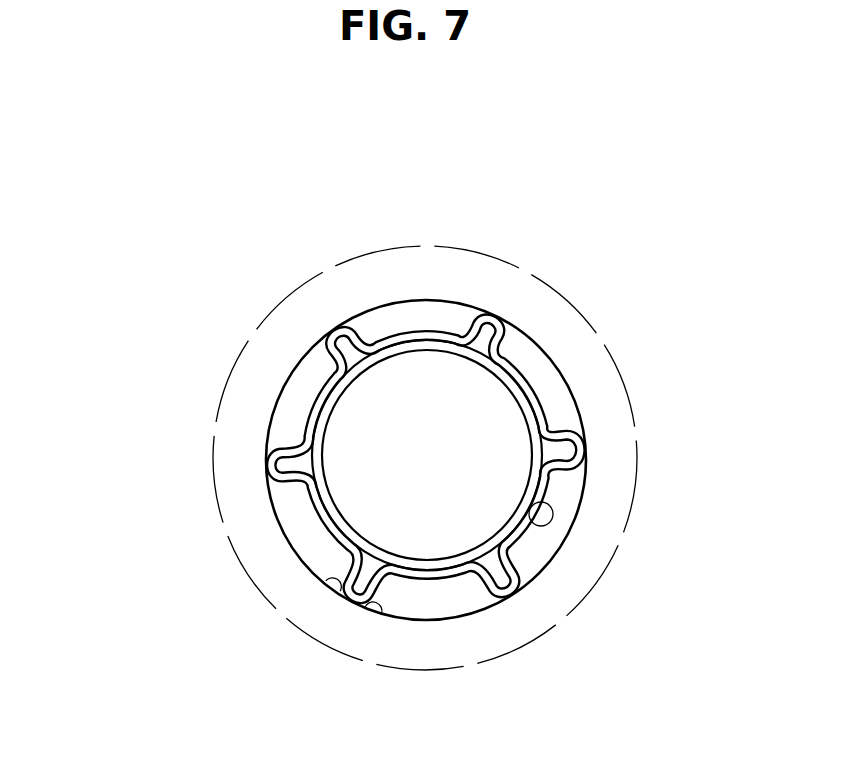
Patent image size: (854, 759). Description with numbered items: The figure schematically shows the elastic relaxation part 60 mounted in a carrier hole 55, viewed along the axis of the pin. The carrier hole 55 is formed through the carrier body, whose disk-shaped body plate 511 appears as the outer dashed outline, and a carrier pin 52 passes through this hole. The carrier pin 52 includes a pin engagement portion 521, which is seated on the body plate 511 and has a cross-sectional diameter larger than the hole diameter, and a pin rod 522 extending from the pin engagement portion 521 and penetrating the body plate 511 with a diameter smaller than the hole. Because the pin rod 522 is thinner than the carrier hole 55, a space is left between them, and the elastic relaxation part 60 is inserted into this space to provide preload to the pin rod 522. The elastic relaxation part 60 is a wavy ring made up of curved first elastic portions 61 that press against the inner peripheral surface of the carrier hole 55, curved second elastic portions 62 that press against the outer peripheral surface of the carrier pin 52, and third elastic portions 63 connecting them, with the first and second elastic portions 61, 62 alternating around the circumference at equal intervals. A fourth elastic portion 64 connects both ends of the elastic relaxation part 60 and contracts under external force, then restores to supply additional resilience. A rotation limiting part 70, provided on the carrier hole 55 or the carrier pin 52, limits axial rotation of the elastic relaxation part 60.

The carrier pin 52 is at (415, 339).
The pin engagement portion 521 is at (307, 374).
The pin rod 522 is at (414, 365).
The carrier hole 55 is at (556, 376).
The body plate 511 is at (607, 465).
The elastic relaxation part 60 is at (318, 458).
The first elastic portion 61 is at (270, 467).
The second elastic portion 62 is at (322, 528).
The third elastic portion 63 is at (295, 490).
The fourth elastic portion 64 is at (553, 519).
The rotation limiting part 70 is at (373, 612).